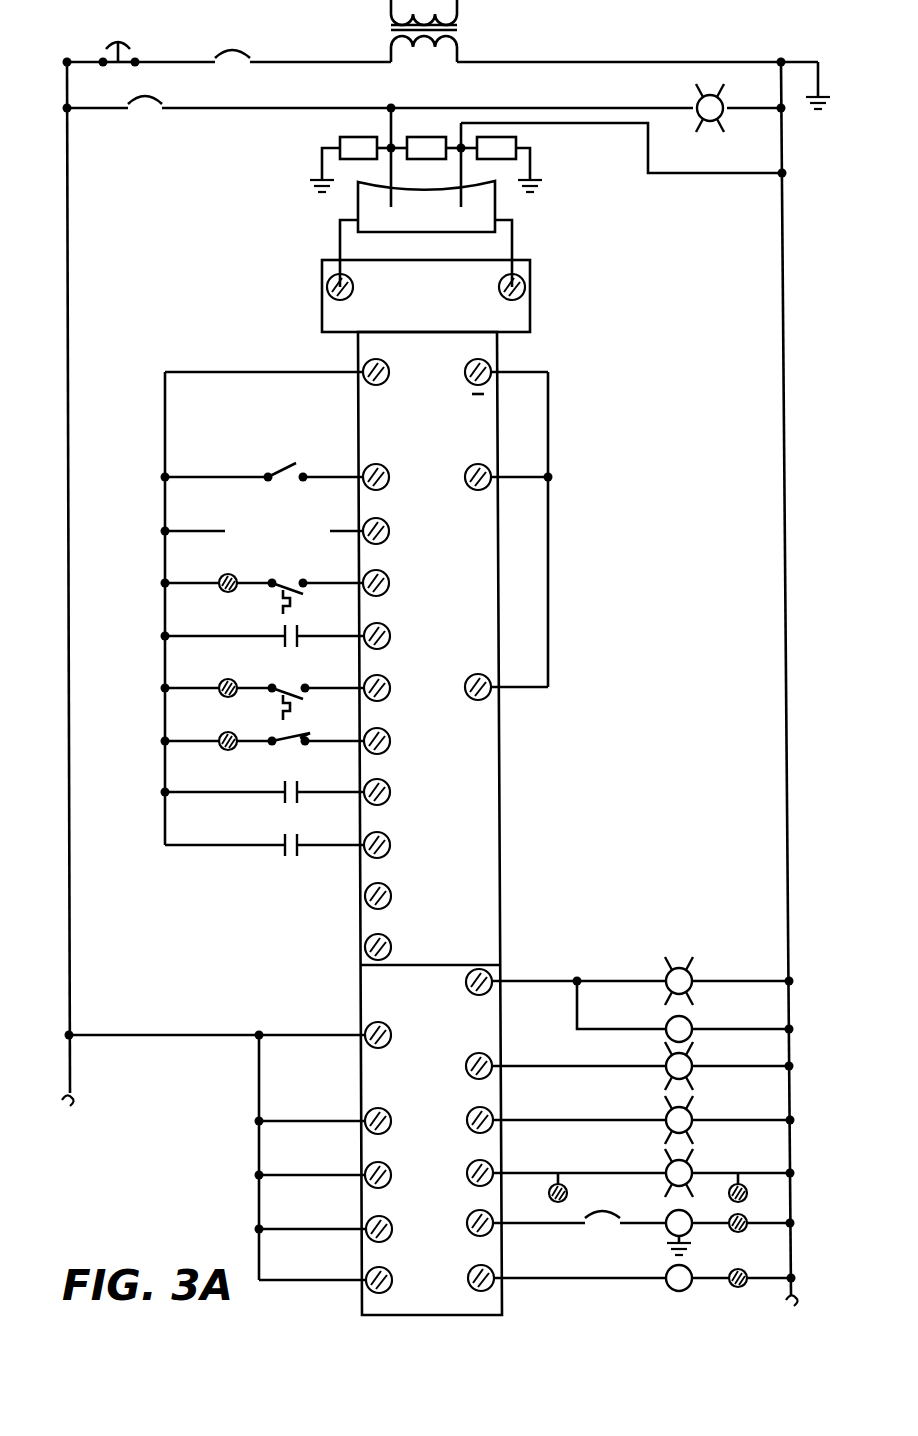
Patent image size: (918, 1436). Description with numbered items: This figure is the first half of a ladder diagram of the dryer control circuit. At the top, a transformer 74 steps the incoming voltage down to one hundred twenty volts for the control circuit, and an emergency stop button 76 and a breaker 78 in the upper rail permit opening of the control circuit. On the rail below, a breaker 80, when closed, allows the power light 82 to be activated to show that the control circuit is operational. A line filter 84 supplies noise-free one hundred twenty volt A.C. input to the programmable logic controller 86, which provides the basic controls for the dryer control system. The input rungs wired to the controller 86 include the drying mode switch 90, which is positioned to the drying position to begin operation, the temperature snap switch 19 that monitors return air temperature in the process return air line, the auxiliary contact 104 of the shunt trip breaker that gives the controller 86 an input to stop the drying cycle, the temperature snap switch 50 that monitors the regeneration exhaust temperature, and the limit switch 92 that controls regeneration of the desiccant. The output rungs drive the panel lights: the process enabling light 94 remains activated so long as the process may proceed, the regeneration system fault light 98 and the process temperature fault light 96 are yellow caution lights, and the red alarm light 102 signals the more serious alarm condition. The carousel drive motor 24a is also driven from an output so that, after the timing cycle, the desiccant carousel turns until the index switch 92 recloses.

The transformer 74 is at (460, 25).
The emergency stop button 76 is at (122, 60).
The breaker 78 is at (245, 47).
The breaker 80 is at (150, 96).
The power light 82 is at (694, 98).
The line filter 84 is at (485, 200).
The programmable logic controller 86 is at (442, 566).
The drying mode switch 90 is at (268, 476).
The temperature snap switch 19 is at (272, 582).
The auxiliary contact 104 is at (283, 633).
The temperature snap switch 50 is at (272, 685).
The limit switch 92 is at (270, 744).
The process enabling light 94 is at (679, 968).
The regeneration system fault light 98 is at (670, 1062).
The process temperature fault light 96 is at (670, 1116).
The alarm light 102 is at (670, 1170).
The carousel drive motor 24a is at (670, 1234).